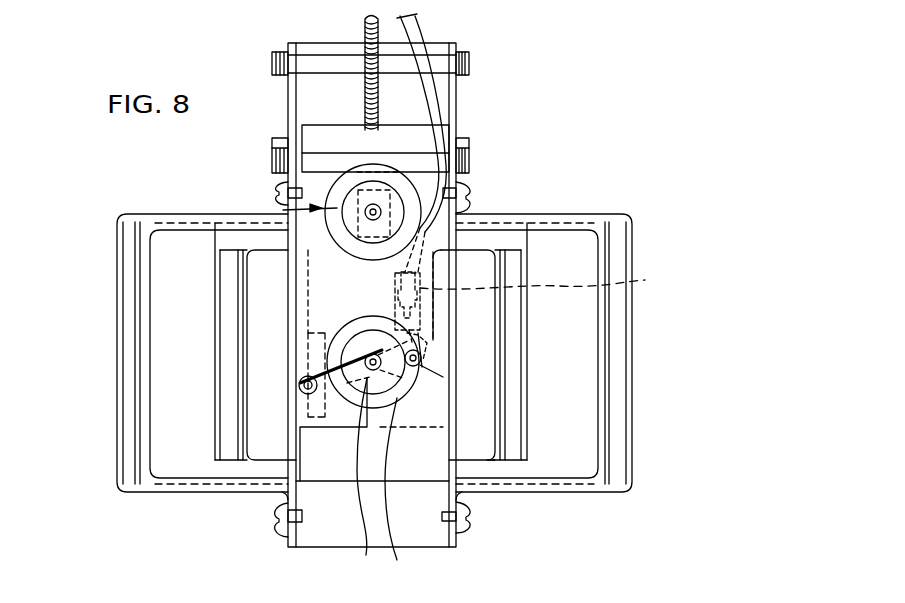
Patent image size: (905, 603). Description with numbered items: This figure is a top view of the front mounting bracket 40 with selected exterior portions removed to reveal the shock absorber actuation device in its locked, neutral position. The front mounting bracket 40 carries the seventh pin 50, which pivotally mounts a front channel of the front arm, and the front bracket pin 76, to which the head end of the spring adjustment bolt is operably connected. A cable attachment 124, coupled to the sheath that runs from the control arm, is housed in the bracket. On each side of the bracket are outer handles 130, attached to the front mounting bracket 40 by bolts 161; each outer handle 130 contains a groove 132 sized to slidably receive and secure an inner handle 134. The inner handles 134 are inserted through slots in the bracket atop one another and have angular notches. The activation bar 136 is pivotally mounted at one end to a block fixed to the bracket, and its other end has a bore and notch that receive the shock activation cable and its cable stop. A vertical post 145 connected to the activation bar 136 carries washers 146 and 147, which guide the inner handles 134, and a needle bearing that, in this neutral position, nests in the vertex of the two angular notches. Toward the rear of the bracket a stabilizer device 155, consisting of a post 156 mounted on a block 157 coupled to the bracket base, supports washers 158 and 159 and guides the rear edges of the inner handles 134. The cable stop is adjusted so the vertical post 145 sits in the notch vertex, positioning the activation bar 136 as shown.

The front mounting bracket 40 is at (458, 548).
The seventh pin 50 is at (470, 58).
The front bracket pin 76 is at (470, 148).
The cable attachment 124 is at (539, 178).
The outer handles 130 is at (132, 332).
The groove 132 is at (197, 476).
The inner handles 134 is at (227, 413).
The activation bar 136 is at (417, 346).
The vertical post 145 is at (350, 357).
The washer 146 is at (366, 555).
The washer 147 is at (397, 560).
The stabilizer device 155 is at (283, 210).
The post 156 is at (462, 212).
The block 157 is at (463, 186).
The washer 158 is at (272, 146).
The washer 159 is at (373, 188).
The bolts 161 is at (274, 186).